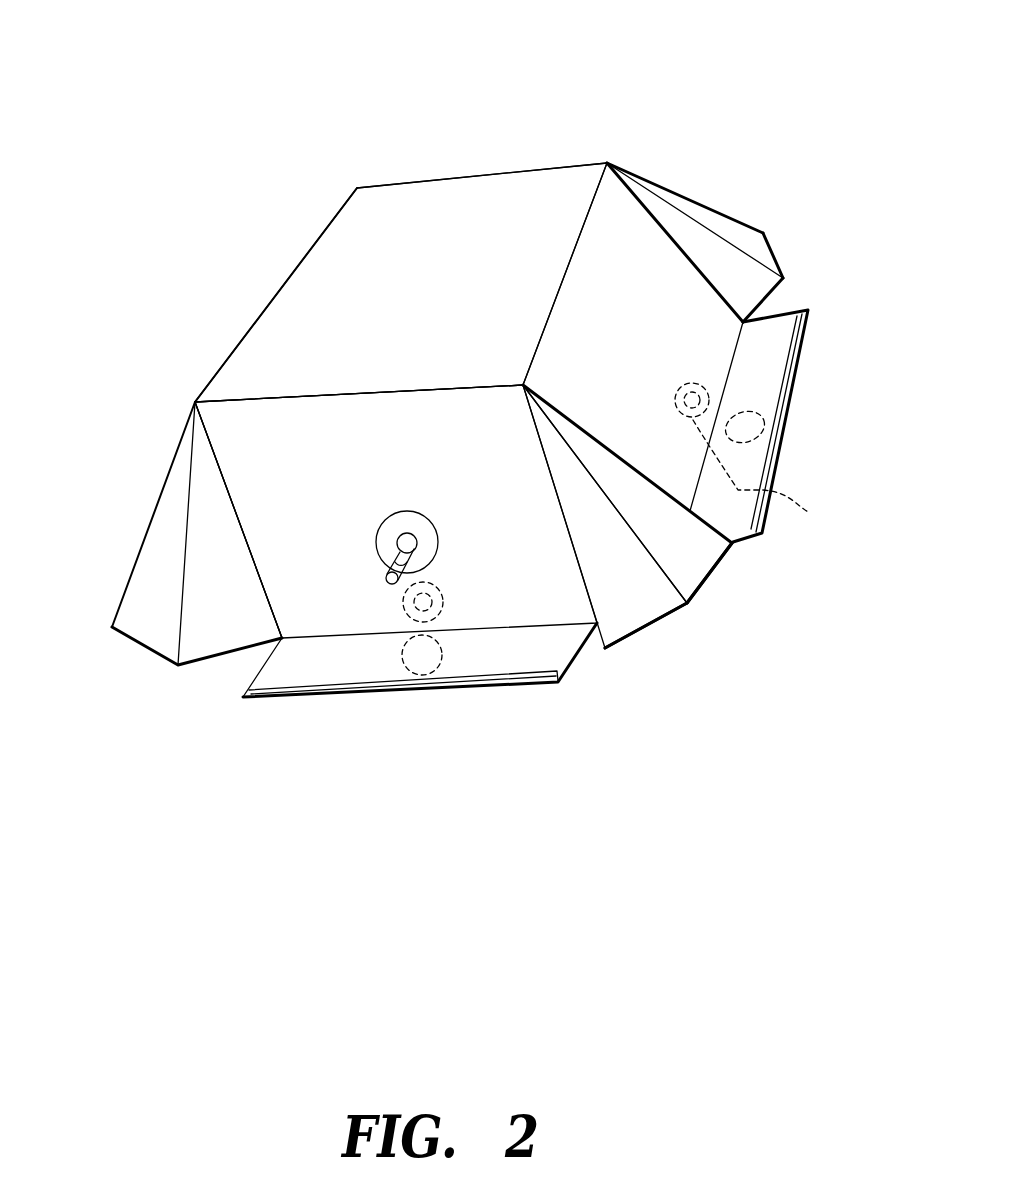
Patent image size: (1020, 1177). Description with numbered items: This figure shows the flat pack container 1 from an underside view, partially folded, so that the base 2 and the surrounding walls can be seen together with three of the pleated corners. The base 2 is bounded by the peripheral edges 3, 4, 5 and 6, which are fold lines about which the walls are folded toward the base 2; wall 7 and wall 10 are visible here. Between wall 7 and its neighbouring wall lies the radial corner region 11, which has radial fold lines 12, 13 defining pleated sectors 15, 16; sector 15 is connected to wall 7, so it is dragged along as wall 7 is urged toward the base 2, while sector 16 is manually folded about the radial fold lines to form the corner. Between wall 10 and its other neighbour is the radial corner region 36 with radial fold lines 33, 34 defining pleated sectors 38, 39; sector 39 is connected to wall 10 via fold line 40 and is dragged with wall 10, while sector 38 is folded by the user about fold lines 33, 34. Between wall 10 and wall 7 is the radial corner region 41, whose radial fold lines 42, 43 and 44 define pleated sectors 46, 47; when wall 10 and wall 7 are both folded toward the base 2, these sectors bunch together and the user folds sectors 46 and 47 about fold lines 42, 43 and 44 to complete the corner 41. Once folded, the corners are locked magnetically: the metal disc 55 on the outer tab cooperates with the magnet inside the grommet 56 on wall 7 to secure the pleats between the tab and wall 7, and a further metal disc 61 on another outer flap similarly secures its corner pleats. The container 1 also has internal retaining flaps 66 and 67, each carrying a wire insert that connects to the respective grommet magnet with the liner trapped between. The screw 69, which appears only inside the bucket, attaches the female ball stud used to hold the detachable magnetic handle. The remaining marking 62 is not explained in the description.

The flat pack container 1 is at (172, 56).
The base 2 is at (401, 282).
The peripheral edge 3 is at (333, 394).
The peripheral edge 4 is at (295, 268).
The peripheral edge 5 is at (432, 182).
The peripheral edge 6 is at (565, 272).
The wall 7 is at (396, 511).
The wall 10 is at (665, 242).
The radial corner region 11 is at (125, 830).
The radial fold line 12 is at (177, 667).
The radial fold line 13 is at (128, 577).
The pleated sector 15 is at (212, 645).
The pleated sector 16 is at (140, 627).
The radial fold line 33 is at (692, 200).
The radial fold line 34 is at (784, 280).
The radial corner region 36 is at (803, 139).
The pleated sector 38 is at (748, 232).
The pleated sector 39 is at (757, 292).
The fold line 40 is at (693, 265).
The radial corner region 41 is at (762, 697).
The radial fold line 42 is at (567, 533).
The radial fold line 43 is at (710, 627).
The radial fold line 44 is at (568, 413).
The pleated sector 46 is at (717, 551).
The pleated sector 47 is at (638, 608).
The metal disc 55 is at (442, 662).
The grommet 56 is at (440, 588).
The metal disc 61 is at (765, 427).
The tear line 62 is at (767, 484).
The internal retaining flap 66 is at (774, 375).
The internal retaining flap 67 is at (560, 648).
The screw 69 is at (397, 543).